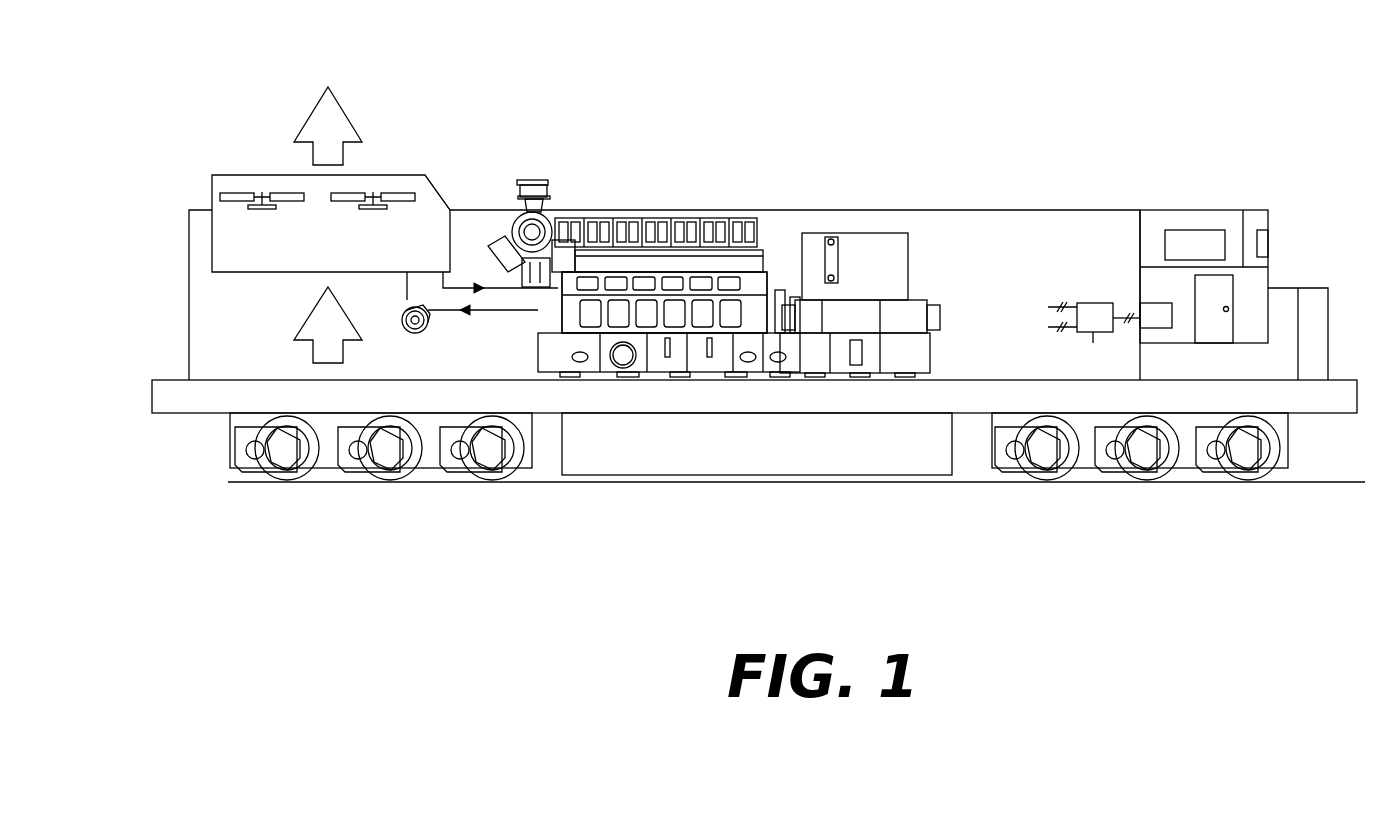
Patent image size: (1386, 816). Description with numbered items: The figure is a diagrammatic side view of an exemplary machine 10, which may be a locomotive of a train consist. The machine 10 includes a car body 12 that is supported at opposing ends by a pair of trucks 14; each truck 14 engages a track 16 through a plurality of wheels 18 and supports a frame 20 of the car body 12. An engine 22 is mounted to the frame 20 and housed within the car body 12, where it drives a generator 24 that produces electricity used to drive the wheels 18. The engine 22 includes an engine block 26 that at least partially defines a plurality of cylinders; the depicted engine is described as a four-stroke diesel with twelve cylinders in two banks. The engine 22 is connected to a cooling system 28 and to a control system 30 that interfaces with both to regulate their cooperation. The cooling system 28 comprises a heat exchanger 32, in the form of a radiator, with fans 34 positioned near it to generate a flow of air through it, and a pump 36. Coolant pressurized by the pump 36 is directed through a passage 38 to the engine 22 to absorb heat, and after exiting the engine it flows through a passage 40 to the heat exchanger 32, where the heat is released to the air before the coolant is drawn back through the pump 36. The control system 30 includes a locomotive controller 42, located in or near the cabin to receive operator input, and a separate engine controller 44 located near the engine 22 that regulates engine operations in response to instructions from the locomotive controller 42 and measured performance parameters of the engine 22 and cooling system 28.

The machine 10 is at (1168, 143).
The car body 12 is at (1030, 266).
The truck 14 is at (393, 512).
The track 16 is at (540, 483).
The wheel 18 is at (288, 482).
The frame 20 is at (1180, 409).
The engine 22 is at (783, 230).
The generator 24 is at (890, 280).
The engine block 26 is at (748, 313).
The cooling system 28 is at (235, 307).
The control system 30 is at (1066, 336).
The heat exchanger 32 is at (212, 232).
The fan 34 is at (258, 194).
The pump 36 is at (416, 336).
The passage 38 is at (460, 284).
The passage 40 is at (490, 314).
The locomotive controller 42 is at (1157, 315).
The engine controller 44 is at (1095, 312).